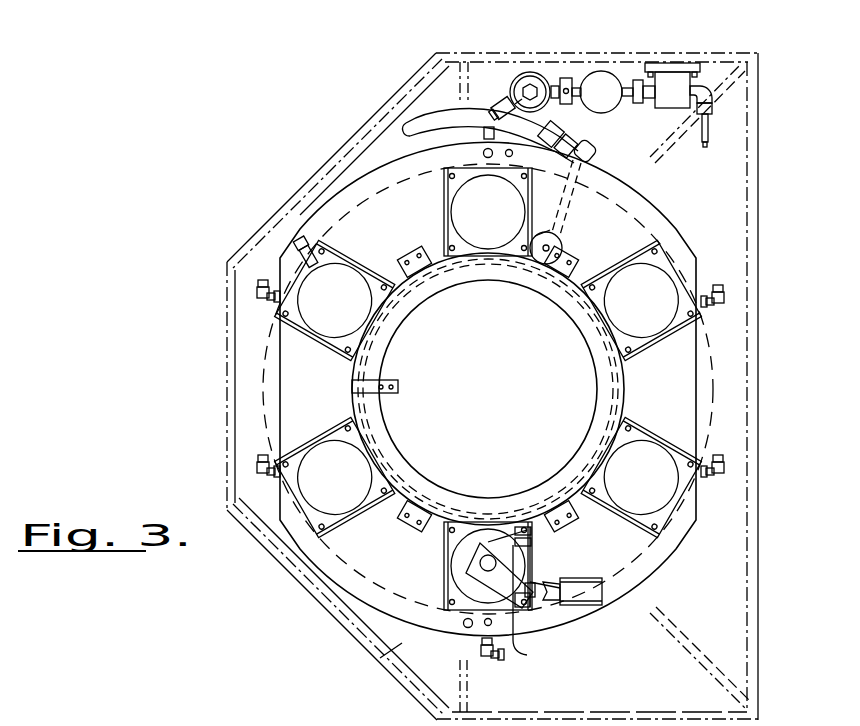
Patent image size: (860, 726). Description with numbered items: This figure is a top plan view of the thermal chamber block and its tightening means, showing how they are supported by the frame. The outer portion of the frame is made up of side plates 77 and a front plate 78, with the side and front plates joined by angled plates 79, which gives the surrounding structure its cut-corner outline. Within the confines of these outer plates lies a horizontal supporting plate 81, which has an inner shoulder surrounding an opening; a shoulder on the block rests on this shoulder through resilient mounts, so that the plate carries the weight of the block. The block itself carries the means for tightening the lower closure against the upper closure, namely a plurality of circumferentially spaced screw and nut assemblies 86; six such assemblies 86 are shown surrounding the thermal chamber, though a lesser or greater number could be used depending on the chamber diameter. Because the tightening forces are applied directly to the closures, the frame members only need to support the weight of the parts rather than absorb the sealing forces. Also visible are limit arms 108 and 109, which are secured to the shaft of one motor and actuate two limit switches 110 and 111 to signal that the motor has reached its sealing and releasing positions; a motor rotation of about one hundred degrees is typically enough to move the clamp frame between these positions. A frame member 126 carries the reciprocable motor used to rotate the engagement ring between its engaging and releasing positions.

The side plates 77 is at (547, 62).
The front plate 78 is at (228, 431).
The angled plates 79 is at (372, 128).
The horizontal supporting plate 81 is at (371, 672).
The screw and nut assemblies 86 is at (333, 352).
The limit arm 108 is at (532, 545).
The limit arm 109 is at (514, 603).
The limit switch 110 is at (542, 607).
The limit switch 111 is at (540, 575).
The frame member 126 is at (642, 716).